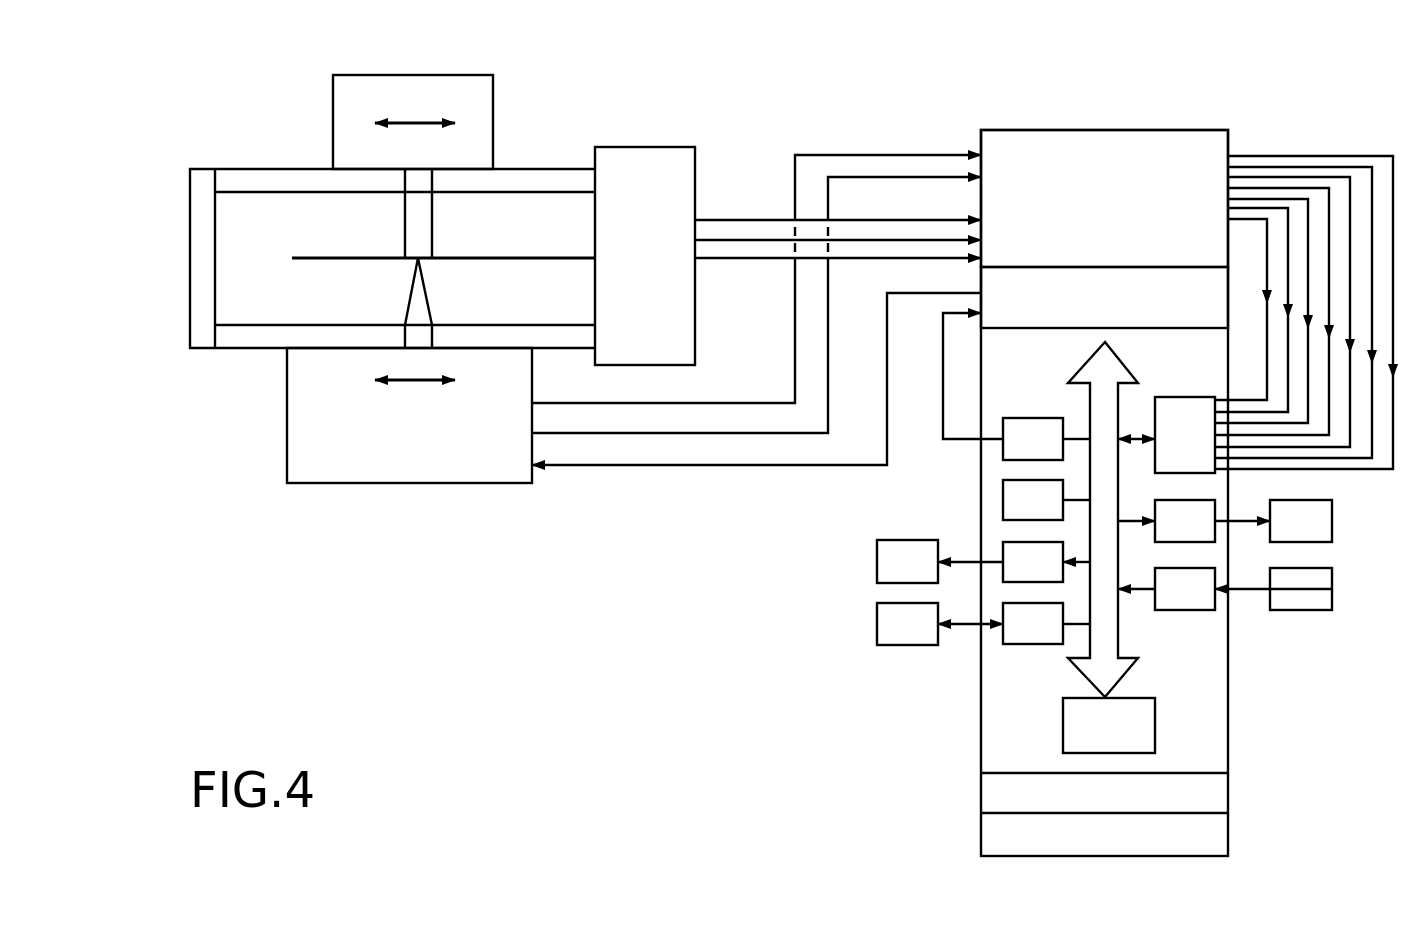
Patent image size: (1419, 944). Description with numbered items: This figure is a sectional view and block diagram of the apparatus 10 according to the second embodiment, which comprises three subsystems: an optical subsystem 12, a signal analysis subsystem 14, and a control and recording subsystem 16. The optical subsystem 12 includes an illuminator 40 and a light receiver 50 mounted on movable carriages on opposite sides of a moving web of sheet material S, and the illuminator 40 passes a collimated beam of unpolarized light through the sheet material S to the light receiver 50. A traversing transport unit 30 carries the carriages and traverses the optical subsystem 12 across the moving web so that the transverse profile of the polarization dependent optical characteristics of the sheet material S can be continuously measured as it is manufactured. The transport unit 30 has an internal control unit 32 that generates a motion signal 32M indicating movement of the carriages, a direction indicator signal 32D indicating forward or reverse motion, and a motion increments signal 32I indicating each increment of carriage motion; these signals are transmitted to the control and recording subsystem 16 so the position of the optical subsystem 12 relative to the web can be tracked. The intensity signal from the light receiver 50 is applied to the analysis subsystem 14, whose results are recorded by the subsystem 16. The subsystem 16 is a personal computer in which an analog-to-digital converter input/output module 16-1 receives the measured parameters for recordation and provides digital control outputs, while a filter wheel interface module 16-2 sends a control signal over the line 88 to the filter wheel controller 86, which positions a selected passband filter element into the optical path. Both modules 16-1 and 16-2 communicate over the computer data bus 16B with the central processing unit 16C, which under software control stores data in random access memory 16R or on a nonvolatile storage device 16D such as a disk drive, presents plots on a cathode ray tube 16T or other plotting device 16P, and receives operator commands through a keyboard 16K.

The apparatus 10 is at (1156, 77).
The optical subsystem 12 is at (177, 458).
The signal analysis subsystem 14 is at (1104, 198).
The control and recording subsystem 16 is at (1229, 712).
The analog-to-digital converter input/output module 16-1 is at (1255, 314).
The filter wheel interface module 16-2 is at (1016, 386).
The computer data bus 16B is at (1125, 372).
The central processing unit 16C is at (1109, 725).
The nonvolatile storage device 16D is at (983, 624).
The keyboard 16K is at (1225, 589).
The plotting device 16P is at (983, 561).
The random access memory 16R is at (1046, 500).
The cathode ray tube 16T is at (1225, 521).
The traversing transport unit 30 is at (559, 133).
The internal control unit 32 is at (645, 256).
The motion signal 32M is at (710, 220).
The motion increments signal 32I is at (730, 240).
The direction indicator signal 32D is at (768, 258).
The illuminator 40 is at (333, 106).
The light receiver 50 is at (285, 413).
The controller 86 is at (1104, 297).
The line 88 is at (672, 467).
The sheet material S is at (321, 257).